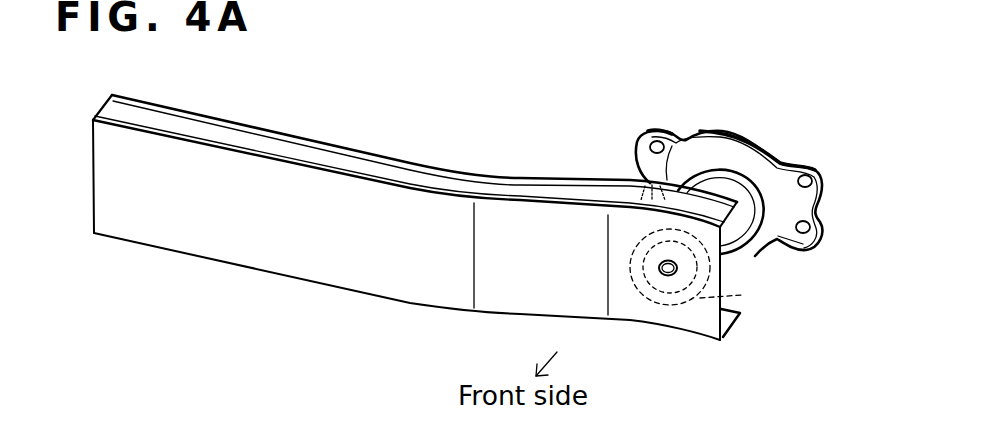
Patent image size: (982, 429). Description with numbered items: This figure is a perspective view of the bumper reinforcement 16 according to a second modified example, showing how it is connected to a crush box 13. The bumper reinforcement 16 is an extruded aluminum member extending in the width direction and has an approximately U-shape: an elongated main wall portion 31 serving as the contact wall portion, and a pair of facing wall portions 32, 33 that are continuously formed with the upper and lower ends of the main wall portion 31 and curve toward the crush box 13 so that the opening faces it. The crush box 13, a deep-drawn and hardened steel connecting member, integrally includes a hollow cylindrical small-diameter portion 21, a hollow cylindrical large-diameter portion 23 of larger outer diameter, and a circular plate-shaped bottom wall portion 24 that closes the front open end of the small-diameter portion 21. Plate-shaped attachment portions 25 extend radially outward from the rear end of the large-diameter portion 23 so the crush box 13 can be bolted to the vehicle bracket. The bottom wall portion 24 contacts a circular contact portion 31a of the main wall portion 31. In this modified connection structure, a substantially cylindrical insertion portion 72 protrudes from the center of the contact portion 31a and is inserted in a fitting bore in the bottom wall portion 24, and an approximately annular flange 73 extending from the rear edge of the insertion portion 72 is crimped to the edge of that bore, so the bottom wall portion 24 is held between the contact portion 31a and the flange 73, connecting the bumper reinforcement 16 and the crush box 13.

The crush box 13 is at (832, 144).
The bumper reinforcement 16 is at (232, 95).
The small-diameter portion 21 is at (744, 257).
The large-diameter portion 23 is at (780, 207).
The bottom wall portion 24 is at (633, 288).
The attachment portion 25 is at (797, 160).
The main wall portion 31 is at (292, 276).
The contact portion 31a is at (690, 300).
The facing wall portion 32 is at (525, 175).
The facing wall portion 33 is at (735, 320).
The insertion portion 72 is at (663, 283).
The flange 73 is at (737, 298).